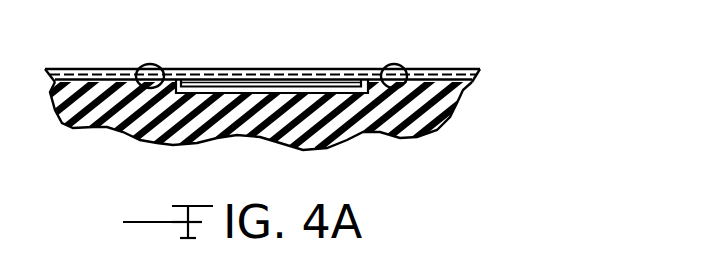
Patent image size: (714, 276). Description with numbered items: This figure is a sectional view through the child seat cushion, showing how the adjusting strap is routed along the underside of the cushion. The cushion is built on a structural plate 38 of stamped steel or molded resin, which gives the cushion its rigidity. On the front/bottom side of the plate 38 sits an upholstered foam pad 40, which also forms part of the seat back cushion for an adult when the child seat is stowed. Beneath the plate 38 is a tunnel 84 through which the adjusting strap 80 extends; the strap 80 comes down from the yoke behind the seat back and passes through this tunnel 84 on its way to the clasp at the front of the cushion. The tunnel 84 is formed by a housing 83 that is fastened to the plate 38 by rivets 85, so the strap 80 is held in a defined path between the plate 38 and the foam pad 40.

The structural plate 38 is at (457, 69).
The upholstered foam pad 40 is at (450, 108).
The adjusting strap 80 is at (272, 72).
The housing 83 is at (187, 80).
The tunnel 84 is at (183, 78).
The rivets 85 is at (167, 31).